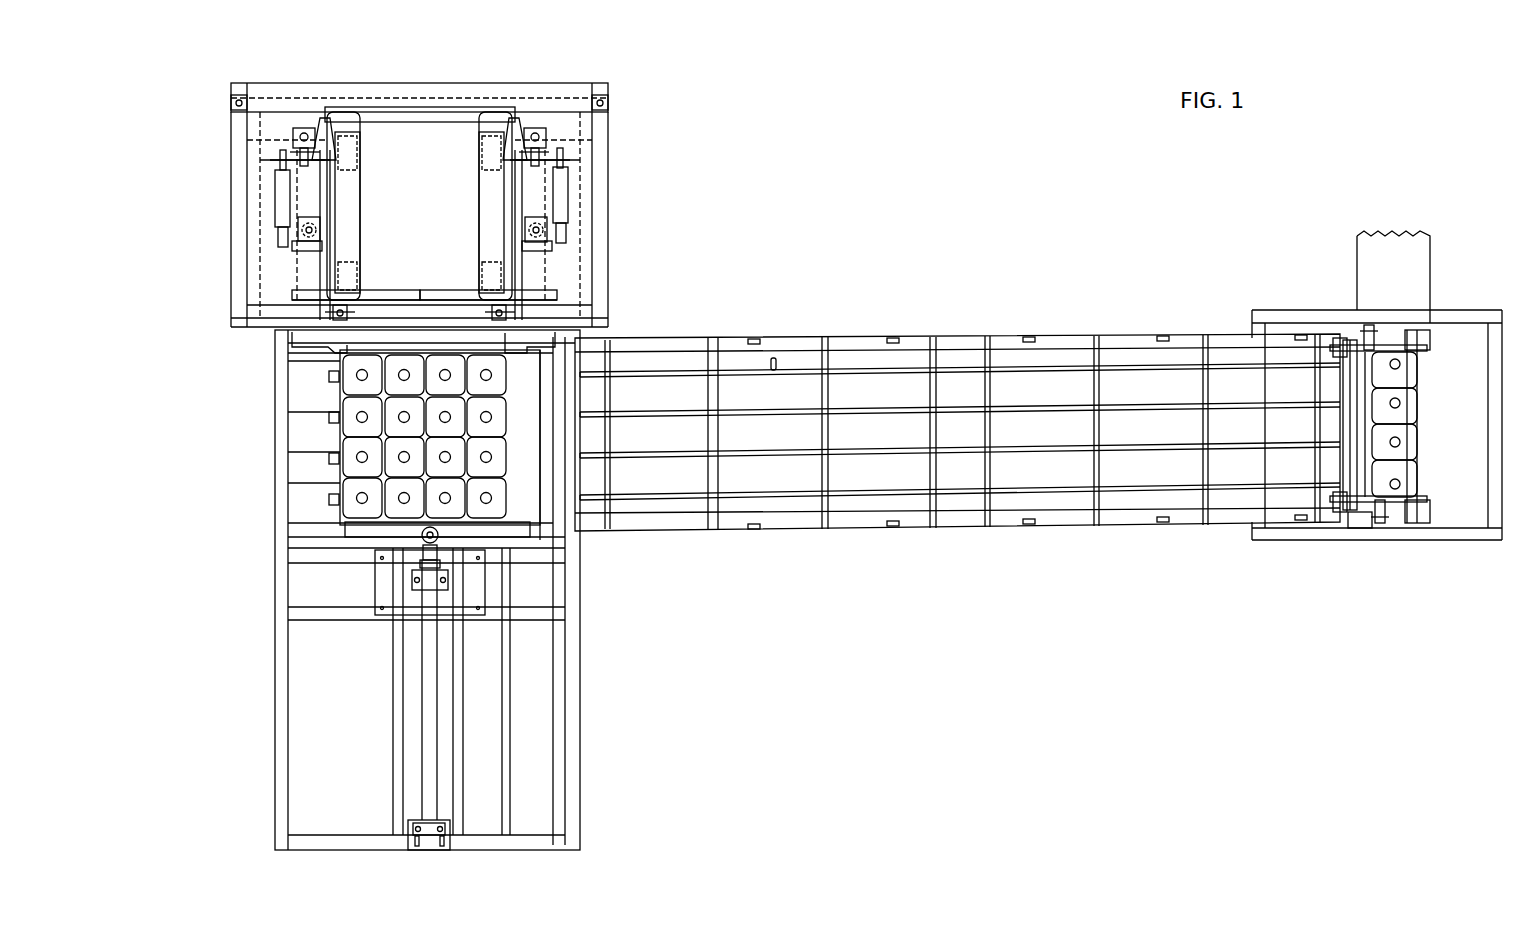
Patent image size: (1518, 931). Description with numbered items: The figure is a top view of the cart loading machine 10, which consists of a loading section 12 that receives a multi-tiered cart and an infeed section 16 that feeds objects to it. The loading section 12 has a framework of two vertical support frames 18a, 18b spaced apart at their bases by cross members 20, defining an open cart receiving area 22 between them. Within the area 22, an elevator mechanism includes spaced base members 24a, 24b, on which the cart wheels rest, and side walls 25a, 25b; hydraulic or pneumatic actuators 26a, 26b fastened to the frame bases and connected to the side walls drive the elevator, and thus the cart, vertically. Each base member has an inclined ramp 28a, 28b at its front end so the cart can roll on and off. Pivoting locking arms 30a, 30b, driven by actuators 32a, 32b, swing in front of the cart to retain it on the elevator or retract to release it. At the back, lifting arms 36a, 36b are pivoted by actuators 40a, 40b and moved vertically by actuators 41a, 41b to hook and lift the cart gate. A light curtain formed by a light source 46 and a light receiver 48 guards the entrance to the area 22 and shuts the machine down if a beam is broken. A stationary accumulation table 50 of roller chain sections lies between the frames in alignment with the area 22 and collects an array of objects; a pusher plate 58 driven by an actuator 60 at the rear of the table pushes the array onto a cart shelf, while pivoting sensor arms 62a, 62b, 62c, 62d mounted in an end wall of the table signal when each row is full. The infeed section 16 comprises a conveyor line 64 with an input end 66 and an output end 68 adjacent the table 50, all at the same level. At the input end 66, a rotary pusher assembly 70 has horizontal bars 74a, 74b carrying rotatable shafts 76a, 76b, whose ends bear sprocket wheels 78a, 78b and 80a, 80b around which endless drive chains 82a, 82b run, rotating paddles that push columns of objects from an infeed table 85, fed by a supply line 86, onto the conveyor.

The cart loading machine 10 is at (868, 205).
The loading section 12 is at (205, 385).
The infeed section 16 is at (1035, 305).
The vertical support frame 18a is at (212, 203).
The vertical support frame 18b is at (652, 170).
The cross members 20 is at (385, 90).
The cart receiving area 22 is at (430, 118).
The base member 24a is at (352, 192).
The base member 24b is at (493, 208).
The side wall 25a is at (325, 125).
The side wall 25b is at (517, 125).
The actuator 26a is at (305, 242).
The actuator 26b is at (540, 231).
The inclined ramp 28a is at (355, 122).
The inclined ramp 28b is at (500, 115).
The pivoting locking arm 30a is at (298, 133).
The pivoting locking arm 30b is at (550, 128).
The actuator 32a is at (280, 203).
The actuator 32b is at (560, 196).
The lifting arm 36a is at (360, 312).
The lifting arm 36b is at (485, 305).
The actuator 40a is at (345, 320).
The actuator 40b is at (500, 312).
The actuator 41a is at (305, 336).
The actuator 41b is at (560, 330).
The light source 46 is at (612, 101).
The light receiver 48 is at (228, 96).
The accumulation table 50 is at (537, 497).
The plate 58 is at (363, 530).
The actuator 60 is at (425, 655).
The pivoting sensor arm 62a is at (332, 378).
The pivoting sensor arm 62b is at (332, 418).
The pivoting sensor arm 62c is at (332, 459).
The pivoting sensor arm 62d is at (332, 500).
The conveyor line 64 is at (335, 486).
The input end 66 is at (1358, 538).
The output end 68 is at (592, 476).
The rotary pusher assembly 70 is at (1330, 292).
The bar 74a is at (1262, 316).
The bar 74b is at (1278, 532).
The shaft 76a is at (1345, 470).
The shaft 76b is at (1407, 448).
The sprocket wheel 78a is at (1332, 345).
The sprocket wheel 78b is at (1340, 508).
The sprocket wheel 80a is at (1420, 352).
The sprocket wheel 80b is at (1420, 500).
The endless drive chain 82a is at (1367, 343).
The endless drive chain 82b is at (1382, 507).
The infeed table 85 is at (1425, 333).
The supply line 86 is at (1418, 243).